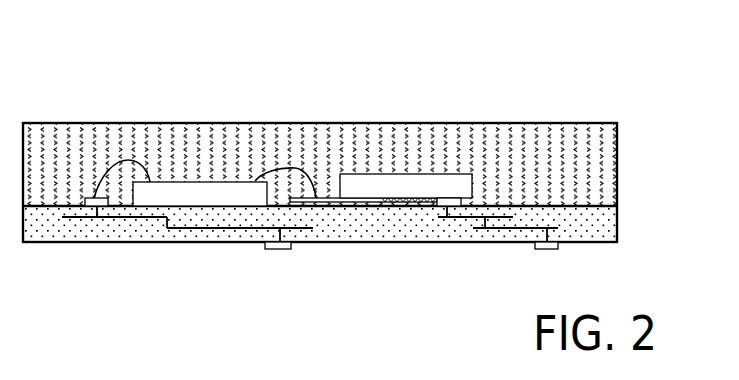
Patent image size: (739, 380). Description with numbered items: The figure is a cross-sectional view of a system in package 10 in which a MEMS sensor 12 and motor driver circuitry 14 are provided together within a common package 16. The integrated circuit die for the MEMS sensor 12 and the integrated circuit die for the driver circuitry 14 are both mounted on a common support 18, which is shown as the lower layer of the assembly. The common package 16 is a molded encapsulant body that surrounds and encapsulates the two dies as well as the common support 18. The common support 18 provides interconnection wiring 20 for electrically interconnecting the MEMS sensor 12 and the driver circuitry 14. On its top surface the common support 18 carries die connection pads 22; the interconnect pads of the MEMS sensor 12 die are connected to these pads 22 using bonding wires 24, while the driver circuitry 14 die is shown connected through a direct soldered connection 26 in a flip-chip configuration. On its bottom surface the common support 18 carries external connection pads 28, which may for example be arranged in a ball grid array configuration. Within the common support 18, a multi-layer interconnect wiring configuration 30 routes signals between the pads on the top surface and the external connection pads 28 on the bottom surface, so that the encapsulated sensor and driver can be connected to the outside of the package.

The system in package 10 is at (591, 104).
The MEMS sensor 12 is at (200, 182).
The motor driver circuitry 14 is at (404, 174).
The common package 16 is at (618, 170).
The common support 18 is at (618, 223).
The interconnection wiring 20 is at (326, 187).
The pads 22 is at (87, 190).
The bonding wires 24 is at (120, 160).
The direct soldered connection 26 is at (451, 187).
The external connection pads 28 is at (280, 249).
The multi-layer interconnect wiring configuration 30 is at (453, 228).